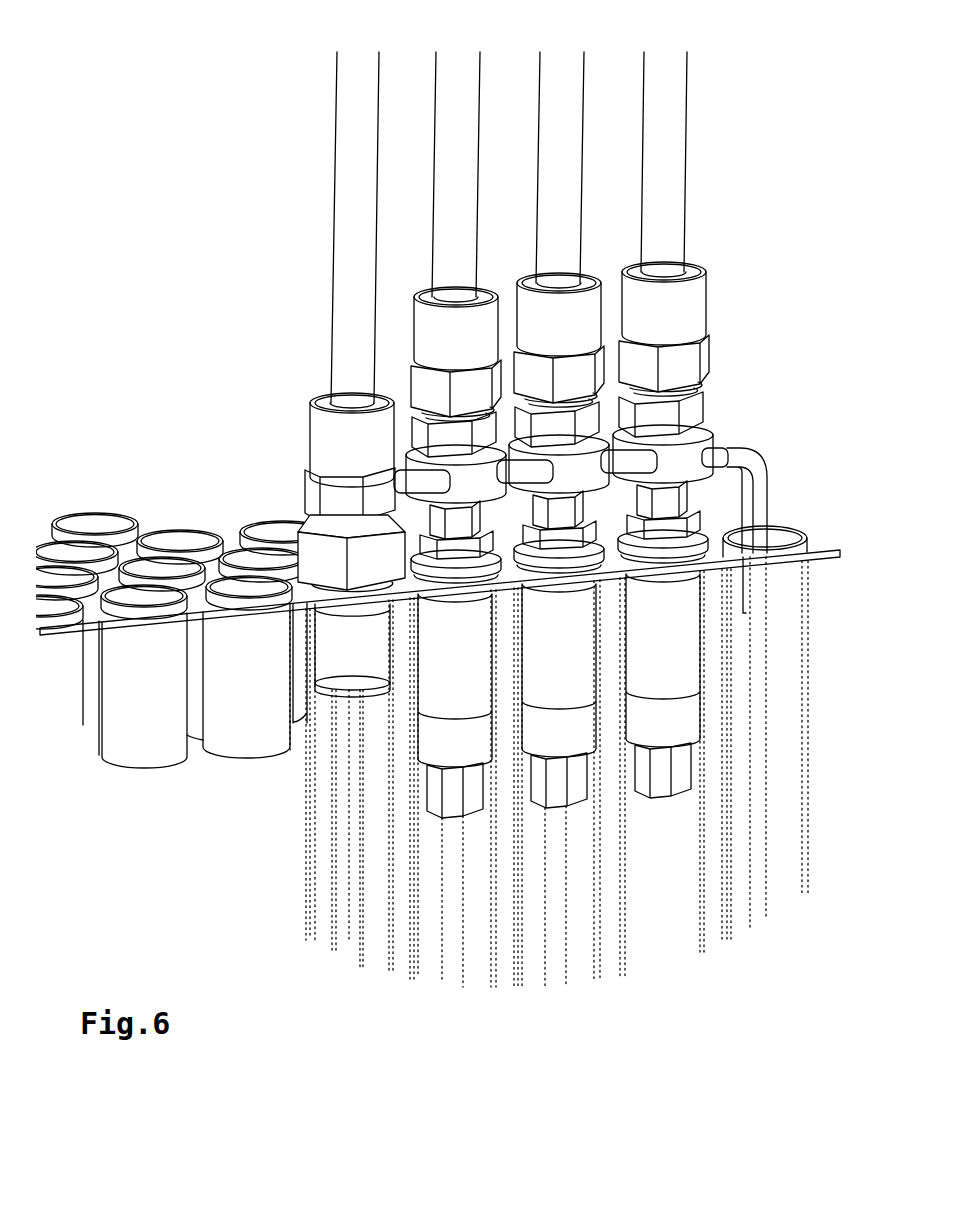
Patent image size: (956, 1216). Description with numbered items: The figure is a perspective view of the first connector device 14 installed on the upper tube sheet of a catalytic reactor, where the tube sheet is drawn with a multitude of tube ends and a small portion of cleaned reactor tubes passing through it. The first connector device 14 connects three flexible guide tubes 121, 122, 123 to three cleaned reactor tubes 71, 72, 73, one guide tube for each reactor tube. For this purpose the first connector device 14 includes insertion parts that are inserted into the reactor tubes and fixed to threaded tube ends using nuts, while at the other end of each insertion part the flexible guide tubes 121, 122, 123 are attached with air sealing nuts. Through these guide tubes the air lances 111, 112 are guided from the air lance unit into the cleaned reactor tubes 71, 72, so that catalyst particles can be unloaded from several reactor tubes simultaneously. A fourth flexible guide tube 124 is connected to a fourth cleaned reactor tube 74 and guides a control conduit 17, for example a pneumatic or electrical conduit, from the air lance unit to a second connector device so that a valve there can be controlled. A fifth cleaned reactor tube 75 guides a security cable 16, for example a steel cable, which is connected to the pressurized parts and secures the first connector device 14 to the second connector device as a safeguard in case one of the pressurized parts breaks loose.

The first connector device 14 is at (160, 371).
The security cable 16 is at (412, 482).
The control conduit 17 is at (350, 945).
The cleaned reactor tube 71 is at (683, 940).
The cleaned reactor tube 72 is at (530, 973).
The cleaned reactor tube 73 is at (425, 963).
The fourth cleaned reactor tube 74 is at (320, 927).
The fifth cleaned reactor tube 75 is at (782, 893).
The air lance 111 is at (450, 970).
The air lance 112 is at (552, 973).
The flexible guide tube 121 is at (651, 72).
The flexible guide tube 122 is at (548, 72).
The flexible guide tube 123 is at (445, 72).
The fourth flexible guide tube 124 is at (345, 72).